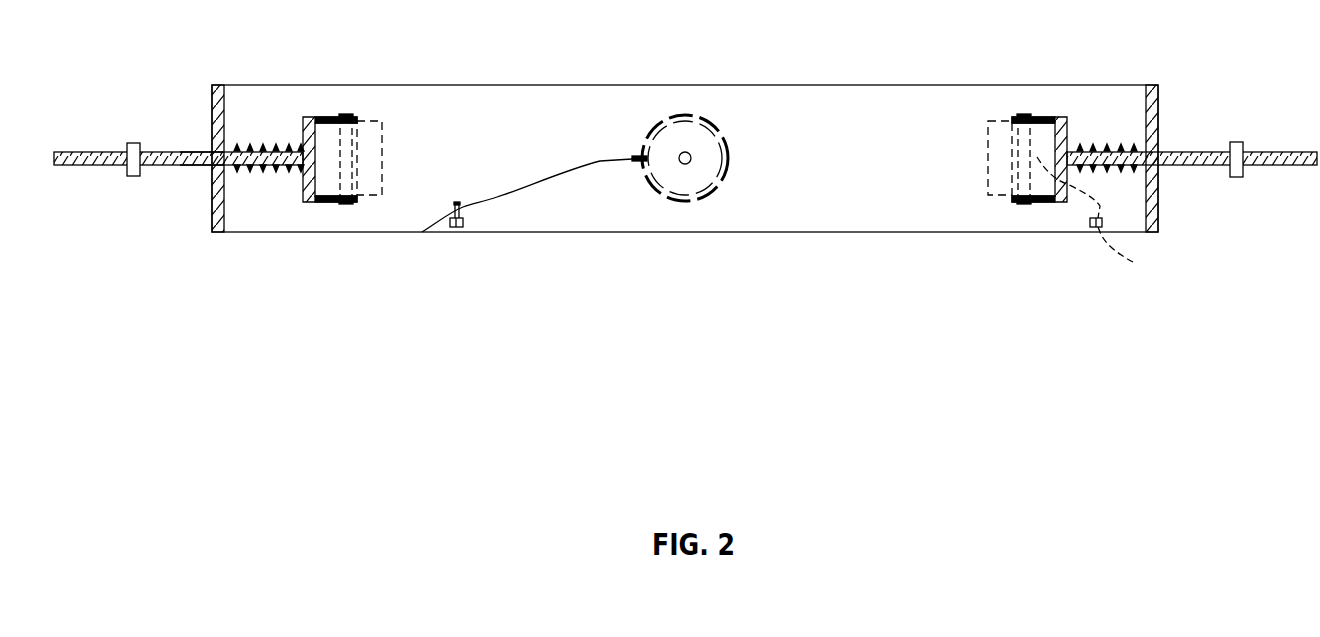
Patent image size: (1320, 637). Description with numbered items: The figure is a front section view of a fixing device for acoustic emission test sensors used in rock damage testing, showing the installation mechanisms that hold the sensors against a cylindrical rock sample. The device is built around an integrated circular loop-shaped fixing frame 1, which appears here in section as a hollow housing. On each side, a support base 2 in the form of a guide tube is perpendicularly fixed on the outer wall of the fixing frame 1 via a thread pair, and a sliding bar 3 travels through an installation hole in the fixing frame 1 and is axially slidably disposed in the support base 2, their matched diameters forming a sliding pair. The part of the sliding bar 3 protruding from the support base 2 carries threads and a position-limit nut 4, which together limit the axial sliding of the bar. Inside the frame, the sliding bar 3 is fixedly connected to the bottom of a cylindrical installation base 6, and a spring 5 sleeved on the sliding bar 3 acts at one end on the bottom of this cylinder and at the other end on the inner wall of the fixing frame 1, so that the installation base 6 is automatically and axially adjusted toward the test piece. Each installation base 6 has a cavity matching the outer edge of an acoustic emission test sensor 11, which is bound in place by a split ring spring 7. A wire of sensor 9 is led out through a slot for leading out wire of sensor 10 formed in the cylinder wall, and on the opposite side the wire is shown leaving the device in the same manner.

The fixing frame 1 is at (488, 112).
The support base 2 is at (203, 150).
The sliding bar 3 is at (87, 152).
The position-limit nut 4 is at (135, 143).
The spring 5 is at (233, 152).
The installation base 6 is at (307, 119).
The split ring spring 7 is at (350, 116).
The wire of sensor 9 is at (602, 162).
The slot for leading out wire of sensor 10 is at (458, 228).
The acoustic emission test sensor 11 is at (381, 119).